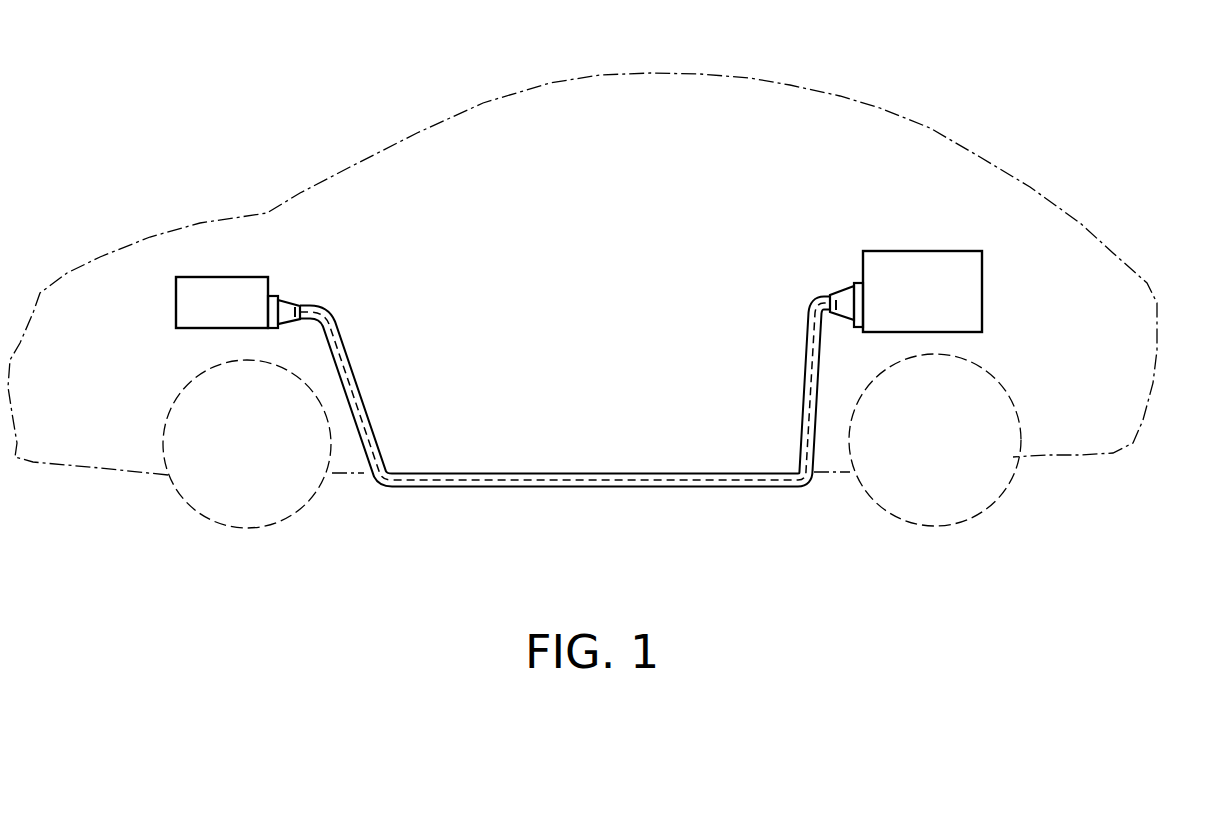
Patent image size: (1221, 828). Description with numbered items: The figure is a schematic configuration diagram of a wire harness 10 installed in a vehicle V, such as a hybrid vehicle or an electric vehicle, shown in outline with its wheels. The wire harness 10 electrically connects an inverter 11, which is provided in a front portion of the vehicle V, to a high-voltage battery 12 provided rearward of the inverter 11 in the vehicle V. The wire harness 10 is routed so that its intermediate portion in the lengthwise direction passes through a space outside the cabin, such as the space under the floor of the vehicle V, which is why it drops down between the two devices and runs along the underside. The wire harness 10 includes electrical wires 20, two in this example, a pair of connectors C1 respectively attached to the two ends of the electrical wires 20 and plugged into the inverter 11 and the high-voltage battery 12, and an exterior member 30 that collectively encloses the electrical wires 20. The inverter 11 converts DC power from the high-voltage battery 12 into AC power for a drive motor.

The vehicle V is at (893, 112).
The wire harness 10 is at (579, 332).
The inverter 11 is at (238, 277).
The high-voltage battery 12 is at (917, 250).
The electrical wires 20 is at (565, 391).
The exterior member 30 is at (339, 330).
The connectors C1 is at (283, 297).